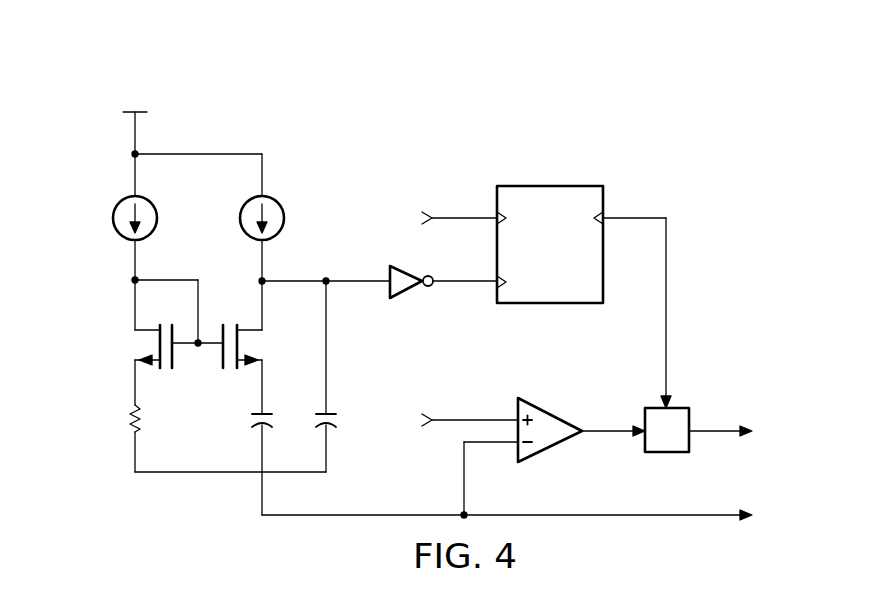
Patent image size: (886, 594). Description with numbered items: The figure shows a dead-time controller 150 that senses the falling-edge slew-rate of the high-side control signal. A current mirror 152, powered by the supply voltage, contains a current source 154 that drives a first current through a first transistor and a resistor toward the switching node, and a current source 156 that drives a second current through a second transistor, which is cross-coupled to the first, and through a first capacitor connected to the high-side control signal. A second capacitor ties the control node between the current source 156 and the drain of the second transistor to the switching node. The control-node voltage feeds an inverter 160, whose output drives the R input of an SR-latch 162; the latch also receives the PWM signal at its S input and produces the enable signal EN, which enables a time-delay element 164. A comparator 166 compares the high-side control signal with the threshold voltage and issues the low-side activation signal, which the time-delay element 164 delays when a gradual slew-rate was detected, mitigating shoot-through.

The dead-time controller 150 is at (686, 102).
The current mirror 152 is at (231, 143).
The current source 154 is at (112, 216).
The current source 156 is at (239, 216).
The inverter 160 is at (406, 285).
The SR-latch 162 is at (550, 185).
The time-delay element 164 is at (683, 453).
The comparator 166 is at (550, 448).